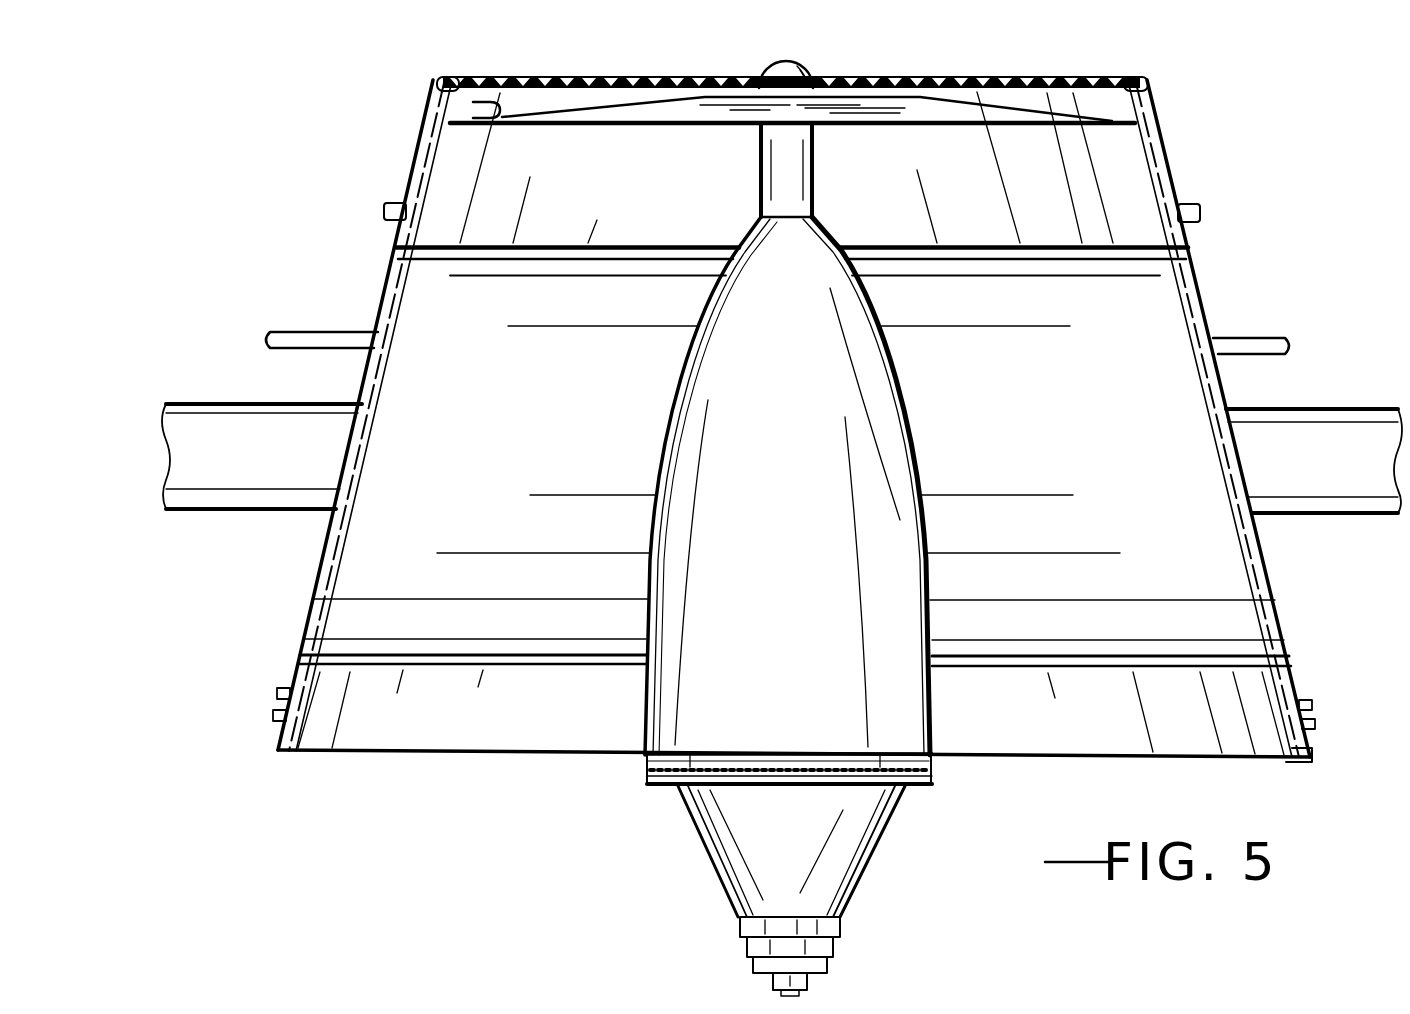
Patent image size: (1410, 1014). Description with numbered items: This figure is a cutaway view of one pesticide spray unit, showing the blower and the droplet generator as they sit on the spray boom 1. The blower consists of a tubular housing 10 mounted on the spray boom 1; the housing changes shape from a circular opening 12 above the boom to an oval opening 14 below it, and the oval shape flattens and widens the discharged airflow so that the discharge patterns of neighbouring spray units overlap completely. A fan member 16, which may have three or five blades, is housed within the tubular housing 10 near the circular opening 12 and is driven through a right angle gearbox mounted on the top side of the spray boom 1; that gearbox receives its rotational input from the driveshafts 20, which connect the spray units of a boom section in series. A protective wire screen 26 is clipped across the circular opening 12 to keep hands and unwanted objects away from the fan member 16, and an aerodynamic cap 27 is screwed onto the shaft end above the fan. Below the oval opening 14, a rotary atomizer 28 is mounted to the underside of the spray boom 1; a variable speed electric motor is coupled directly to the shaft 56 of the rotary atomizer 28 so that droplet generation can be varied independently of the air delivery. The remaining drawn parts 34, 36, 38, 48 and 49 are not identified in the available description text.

The spray boom 1 is at (1335, 440).
The tubular housing 10 is at (430, 160).
The circular opening 12 is at (1140, 118).
The oval opening 14 is at (1296, 760).
The fan member 16 is at (480, 100).
The driveshafts 20 is at (1255, 345).
The protective wire screen 26 is at (1120, 80).
The aerodynamic cap 27 is at (810, 70).
The rotary atomizer 28 is at (848, 838).
The nose body 34 is at (650, 725).
The flange plate 36 is at (940, 756).
The drum shelf 38 is at (1230, 578).
The upper lug 48 is at (1200, 212).
The lower lug 49 is at (1307, 710).
The shaft 56 is at (800, 991).